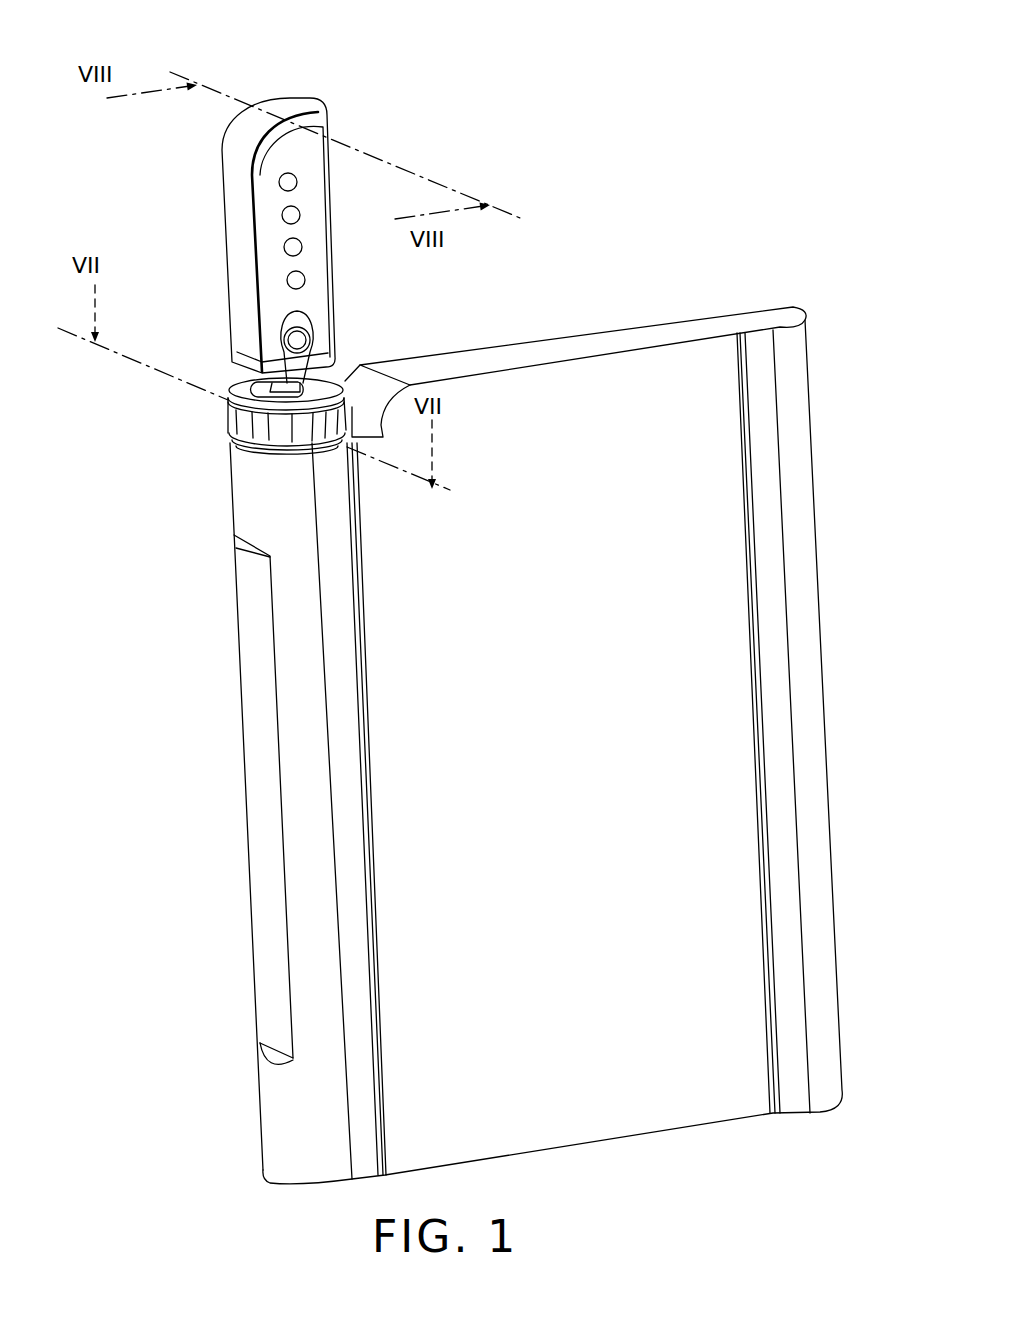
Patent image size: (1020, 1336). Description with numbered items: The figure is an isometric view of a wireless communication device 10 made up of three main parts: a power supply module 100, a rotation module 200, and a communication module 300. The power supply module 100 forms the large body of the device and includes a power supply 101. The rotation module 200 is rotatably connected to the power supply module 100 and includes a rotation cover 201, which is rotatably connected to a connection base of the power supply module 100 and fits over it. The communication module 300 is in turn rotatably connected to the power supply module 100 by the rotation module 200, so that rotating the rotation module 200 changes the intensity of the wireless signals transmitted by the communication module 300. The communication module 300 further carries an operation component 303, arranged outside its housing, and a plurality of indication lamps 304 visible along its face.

The wireless communication device 10 is at (548, 48).
The power supply module 100 is at (718, 318).
The power supply 101 is at (258, 528).
The rotation module 200 is at (224, 423).
The rotation cover 201 is at (308, 392).
The communication module 300 is at (328, 101).
The operation component 303 is at (300, 340).
The indication lamps 304 is at (286, 183).